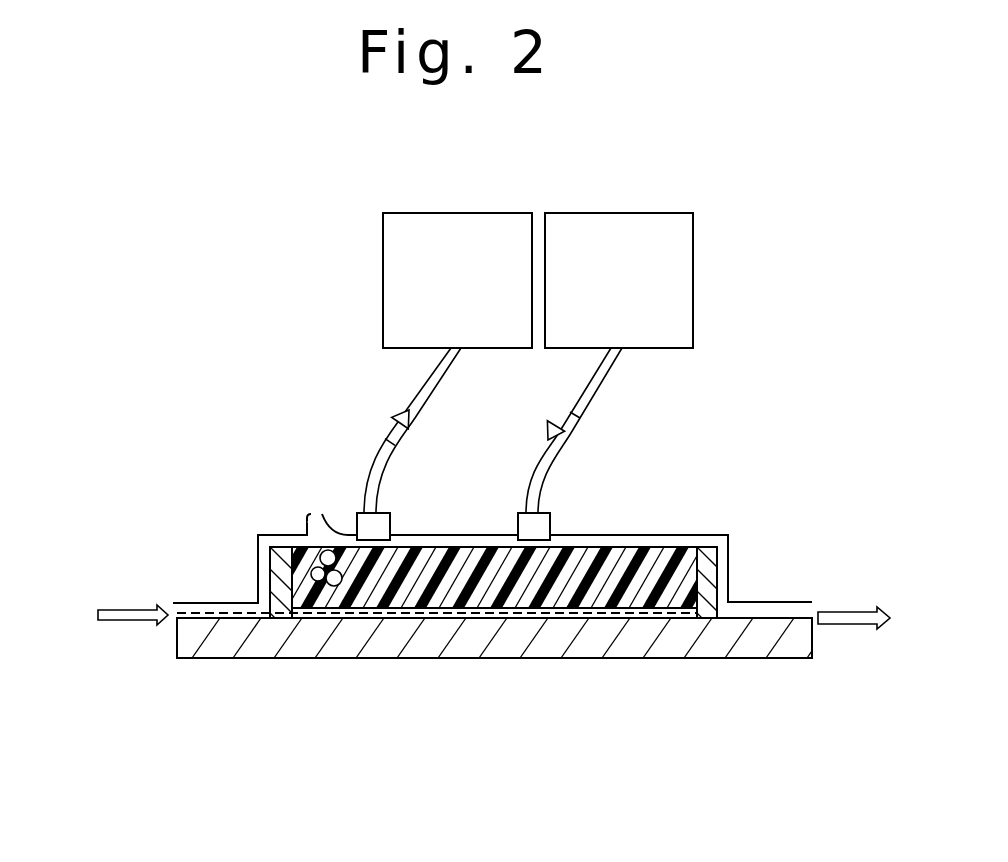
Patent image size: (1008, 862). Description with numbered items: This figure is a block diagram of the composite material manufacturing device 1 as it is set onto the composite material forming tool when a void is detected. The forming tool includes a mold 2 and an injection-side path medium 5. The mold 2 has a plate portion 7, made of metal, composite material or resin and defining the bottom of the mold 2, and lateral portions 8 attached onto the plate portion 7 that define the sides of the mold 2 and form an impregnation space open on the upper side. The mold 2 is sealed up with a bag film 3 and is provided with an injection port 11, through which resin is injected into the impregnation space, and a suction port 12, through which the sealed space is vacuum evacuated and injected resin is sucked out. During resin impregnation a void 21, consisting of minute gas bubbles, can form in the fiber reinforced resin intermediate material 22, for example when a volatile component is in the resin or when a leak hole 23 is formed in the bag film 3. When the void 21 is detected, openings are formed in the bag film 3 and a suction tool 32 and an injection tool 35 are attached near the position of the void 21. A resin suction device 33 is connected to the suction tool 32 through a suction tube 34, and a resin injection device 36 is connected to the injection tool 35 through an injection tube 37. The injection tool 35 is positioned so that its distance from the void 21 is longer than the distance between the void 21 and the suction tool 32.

The composite material manufacturing device 1 is at (822, 464).
The mold 2 is at (506, 635).
The bag film 3 is at (280, 535).
The injection-side path medium 5 is at (318, 617).
The plate portion 7 is at (505, 642).
The lateral portions 8 is at (282, 573).
The injection port 11 is at (207, 612).
The suction port 12 is at (773, 608).
The void 21 is at (315, 575).
The fiber reinforced resin intermediate material 22 is at (653, 583).
The leak hole 23 is at (318, 522).
The suction tool 32 is at (385, 521).
The resin suction device 33 is at (457, 213).
The suction tube 34 is at (410, 436).
The injection tool 35 is at (545, 521).
The resin injection device 36 is at (618, 213).
The injection tube 37 is at (574, 434).